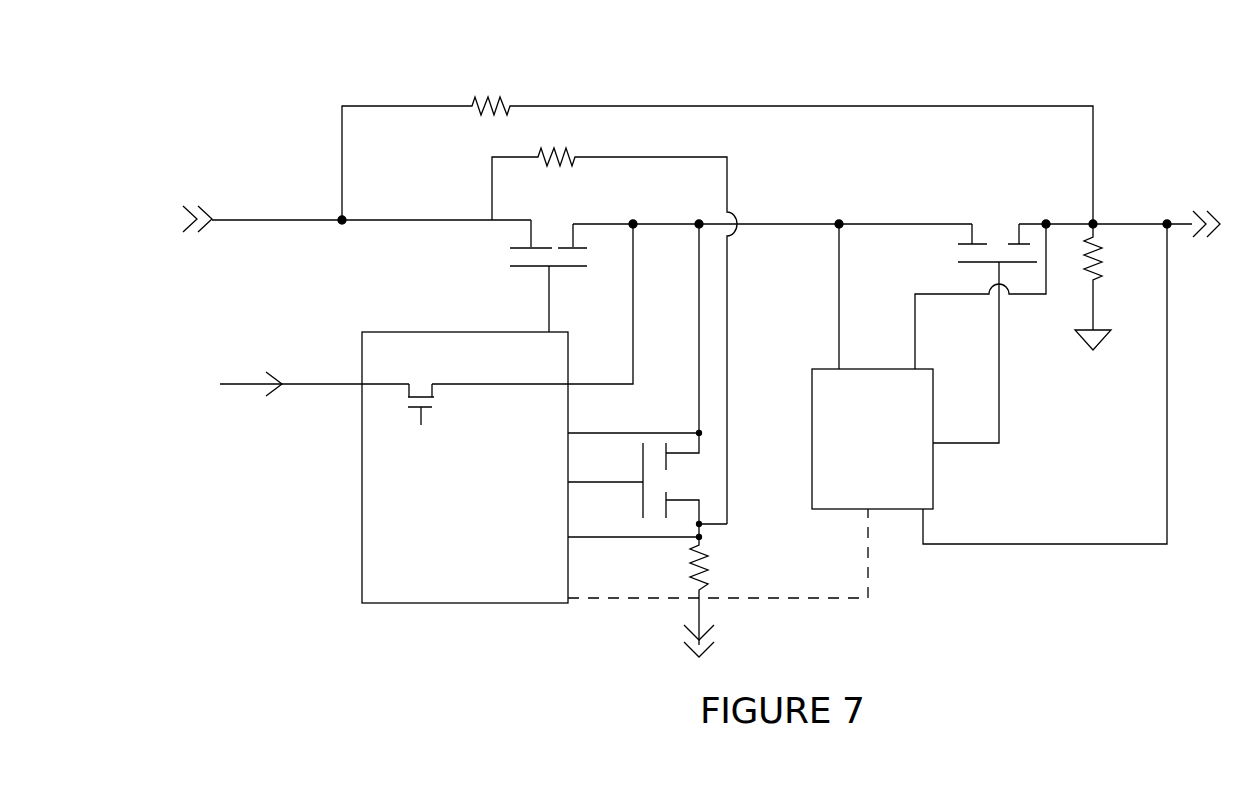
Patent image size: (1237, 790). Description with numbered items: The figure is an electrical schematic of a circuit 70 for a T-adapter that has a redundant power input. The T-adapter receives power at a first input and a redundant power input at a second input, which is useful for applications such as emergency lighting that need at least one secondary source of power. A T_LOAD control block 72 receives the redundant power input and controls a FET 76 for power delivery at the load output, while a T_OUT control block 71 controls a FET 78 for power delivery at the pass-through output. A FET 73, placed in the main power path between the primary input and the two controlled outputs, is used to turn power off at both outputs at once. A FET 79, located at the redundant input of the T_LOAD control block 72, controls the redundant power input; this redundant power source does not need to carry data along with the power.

The circuit 70 is at (791, 51).
The T_OUT control block 71 is at (812, 405).
The T_LOAD control block 72 is at (362, 492).
The FET 73 is at (537, 268).
The FET 76 is at (643, 462).
The FET 78 is at (968, 265).
The FET 79 is at (438, 396).